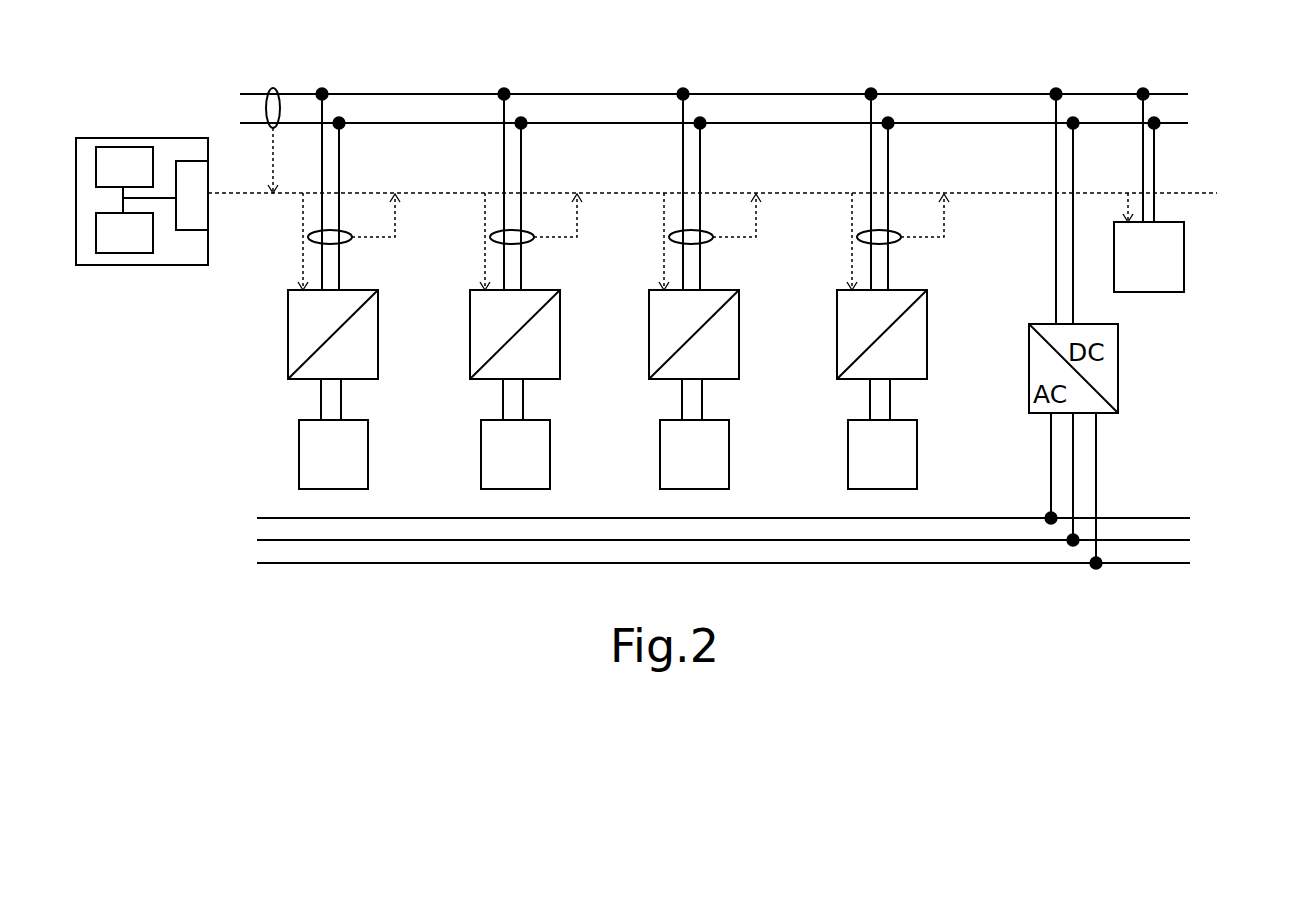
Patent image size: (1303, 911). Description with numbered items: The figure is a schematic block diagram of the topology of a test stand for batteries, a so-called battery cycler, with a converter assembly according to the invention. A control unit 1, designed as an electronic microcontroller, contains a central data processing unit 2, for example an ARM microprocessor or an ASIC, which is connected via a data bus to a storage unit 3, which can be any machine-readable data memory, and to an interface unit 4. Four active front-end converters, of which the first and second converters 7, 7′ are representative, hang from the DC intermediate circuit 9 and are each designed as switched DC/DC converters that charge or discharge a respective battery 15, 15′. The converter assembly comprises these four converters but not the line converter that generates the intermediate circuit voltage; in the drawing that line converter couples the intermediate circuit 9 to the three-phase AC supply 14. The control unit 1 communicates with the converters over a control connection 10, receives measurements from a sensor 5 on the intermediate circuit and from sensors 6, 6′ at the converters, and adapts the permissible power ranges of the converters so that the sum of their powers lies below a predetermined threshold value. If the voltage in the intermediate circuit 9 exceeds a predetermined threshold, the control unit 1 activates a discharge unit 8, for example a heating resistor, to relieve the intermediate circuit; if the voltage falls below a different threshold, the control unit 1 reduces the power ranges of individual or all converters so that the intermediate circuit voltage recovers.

The control unit 1 is at (135, 137).
The central data processing unit 2 is at (116, 180).
The storage unit 3 is at (116, 246).
The interface unit 4 is at (184, 208).
The DC bus measuring sensor 5 is at (276, 87).
The current sensor 6 is at (348, 241).
The current sensor 6′ is at (530, 241).
The active front-end converter 7 is at (290, 300).
The active front-end converter 7′ is at (472, 300).
The discharge unit 8 is at (1140, 270).
The intermediate circuit 9 is at (425, 84).
The communication line 10 is at (707, 192).
The three-phase AC grid 14 is at (1148, 567).
The battery 15 is at (315, 466).
The battery 15′ is at (497, 466).